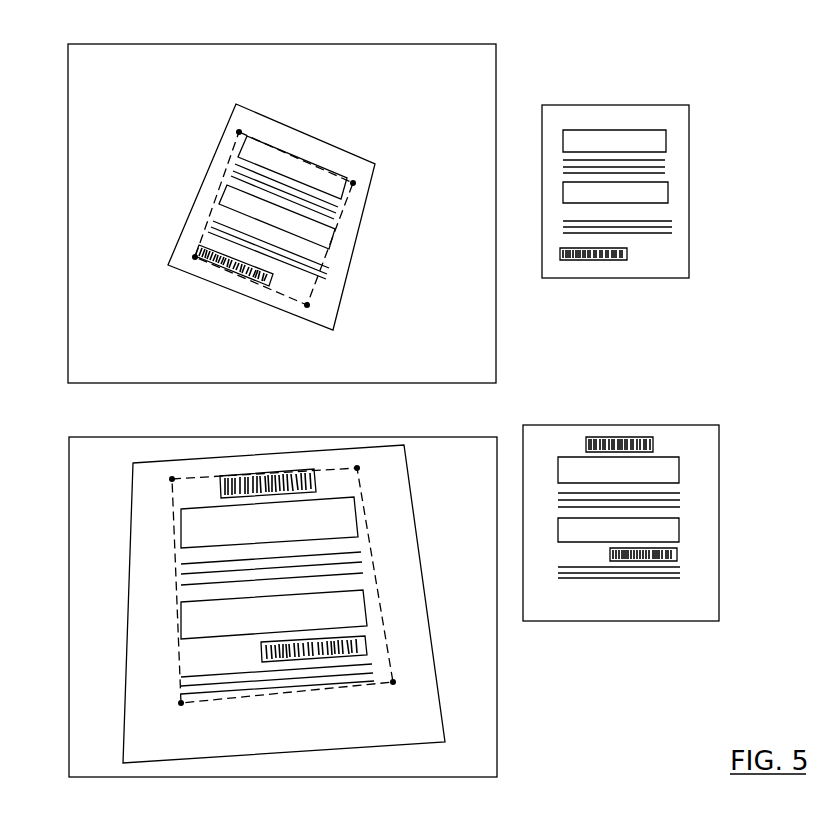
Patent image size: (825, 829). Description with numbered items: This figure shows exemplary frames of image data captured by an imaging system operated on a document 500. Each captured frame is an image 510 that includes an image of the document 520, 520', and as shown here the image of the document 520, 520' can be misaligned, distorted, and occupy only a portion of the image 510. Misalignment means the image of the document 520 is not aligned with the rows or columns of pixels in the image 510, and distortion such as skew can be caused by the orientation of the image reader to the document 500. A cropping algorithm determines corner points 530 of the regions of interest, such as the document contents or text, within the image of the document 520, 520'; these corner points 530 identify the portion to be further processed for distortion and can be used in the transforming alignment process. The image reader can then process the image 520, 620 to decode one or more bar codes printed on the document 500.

The document 500 is at (637, 278).
The image 510 is at (496, 68).
The image of a document 520 is at (288, 217).
The image of a document 520' is at (295, 604).
The corner points 530 is at (239, 132).
The image 620 is at (213, 207).